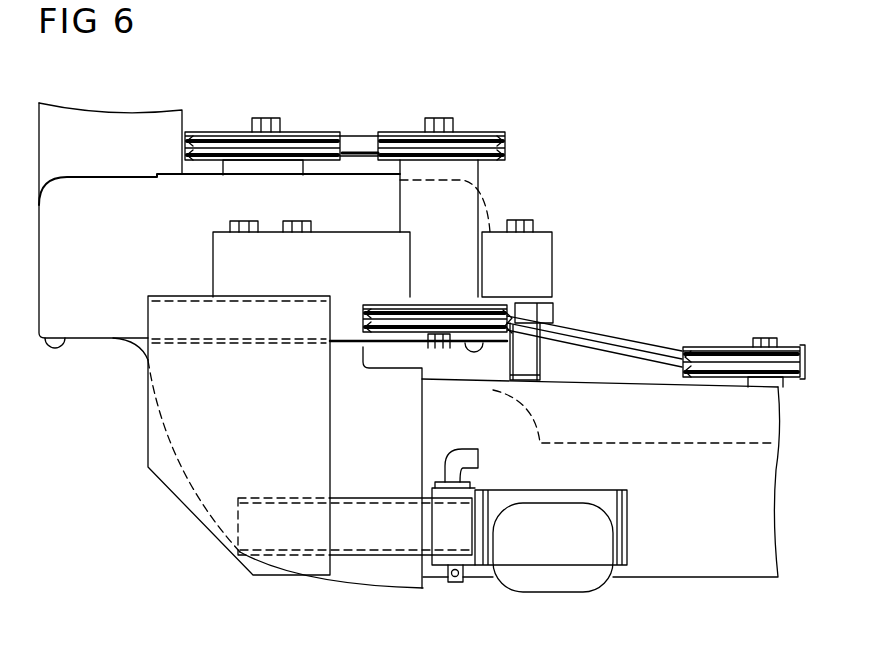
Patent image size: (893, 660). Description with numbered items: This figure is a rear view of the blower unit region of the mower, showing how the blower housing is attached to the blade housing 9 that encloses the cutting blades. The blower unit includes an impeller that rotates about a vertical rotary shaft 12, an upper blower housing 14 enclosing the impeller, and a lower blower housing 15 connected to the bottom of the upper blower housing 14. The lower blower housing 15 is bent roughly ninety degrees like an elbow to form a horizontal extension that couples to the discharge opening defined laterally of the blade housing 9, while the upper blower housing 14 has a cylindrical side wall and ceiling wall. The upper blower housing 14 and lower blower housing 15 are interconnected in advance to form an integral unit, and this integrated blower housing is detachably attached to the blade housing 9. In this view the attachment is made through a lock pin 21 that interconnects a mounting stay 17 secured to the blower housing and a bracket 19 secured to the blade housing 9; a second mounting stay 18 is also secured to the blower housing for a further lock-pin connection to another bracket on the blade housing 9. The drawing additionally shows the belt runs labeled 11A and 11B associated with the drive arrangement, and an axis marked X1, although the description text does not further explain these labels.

The blade housing 9 is at (713, 570).
The belt 11A is at (660, 340).
The belt 11B is at (355, 134).
The vertical rotary shaft 12 is at (267, 208).
The upper blower housing 14 is at (490, 202).
The lower blower housing 15 is at (350, 583).
The mounting stay 17 is at (370, 496).
The mounting stay 18 is at (557, 304).
The bracket 19 is at (477, 490).
The lock pin 21 is at (463, 448).
The pulley axis X1 is at (765, 400).